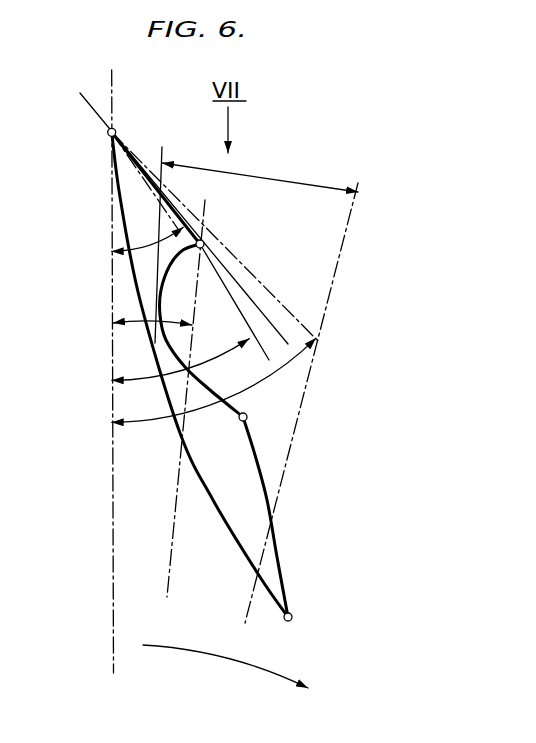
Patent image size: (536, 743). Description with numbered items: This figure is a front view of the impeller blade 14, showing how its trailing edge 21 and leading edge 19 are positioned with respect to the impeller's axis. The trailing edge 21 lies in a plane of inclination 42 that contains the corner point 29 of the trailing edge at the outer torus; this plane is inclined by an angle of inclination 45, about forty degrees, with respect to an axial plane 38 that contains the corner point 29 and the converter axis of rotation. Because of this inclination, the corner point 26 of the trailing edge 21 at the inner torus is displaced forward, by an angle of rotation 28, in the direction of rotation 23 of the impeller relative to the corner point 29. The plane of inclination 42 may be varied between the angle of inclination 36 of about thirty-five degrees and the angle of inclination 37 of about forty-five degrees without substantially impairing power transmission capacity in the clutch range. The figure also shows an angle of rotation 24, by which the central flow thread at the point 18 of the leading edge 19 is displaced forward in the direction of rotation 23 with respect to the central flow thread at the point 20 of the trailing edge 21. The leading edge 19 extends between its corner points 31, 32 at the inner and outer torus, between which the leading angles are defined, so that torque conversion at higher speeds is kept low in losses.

The blade 14 is at (168, 455).
The point of the central flow thread on the leading edge 18 is at (274, 512).
The leading edge 19 is at (281, 543).
The point of the central flow thread on the trailing edge 20 is at (176, 186).
The trailing edge 21 is at (172, 200).
The direction of rotation 23 is at (228, 656).
The angle of rotation 24 is at (297, 183).
The corner point of the trailing edge at the inner torus 26 is at (207, 242).
The angle of rotation 28 is at (133, 328).
The corner point of the trailing edge at the outer torus 29 is at (117, 129).
The corner point of the leading edge at the inner torus 31 is at (249, 420).
The corner point of the leading edge at the outer torus 32 is at (295, 617).
The angle of inclination 36 is at (204, 361).
The angle of inclination 37 is at (198, 414).
The axial plane 38 is at (112, 93).
The plane of inclination 42 is at (97, 115).
The angle of inclination 45 is at (140, 252).